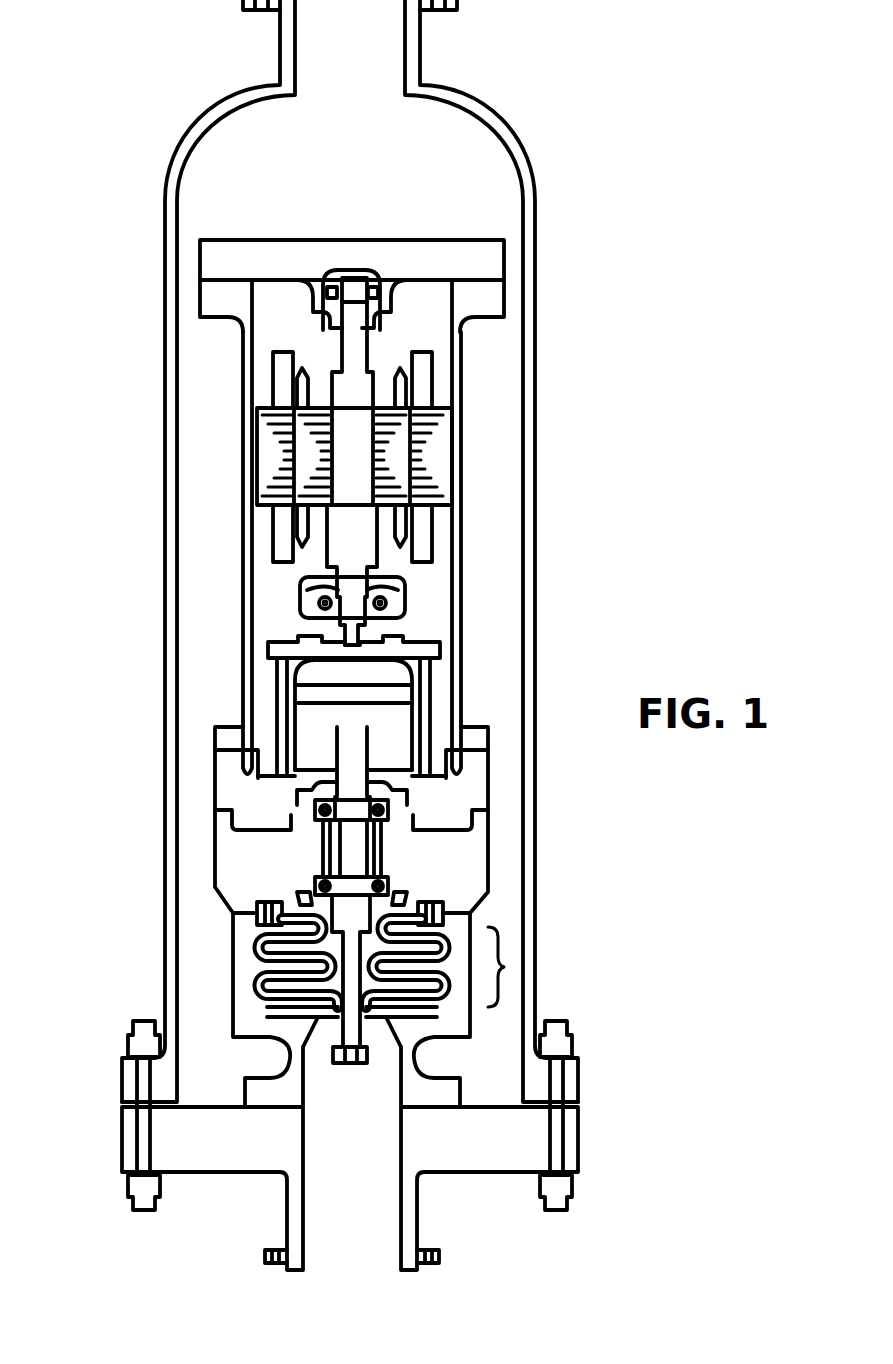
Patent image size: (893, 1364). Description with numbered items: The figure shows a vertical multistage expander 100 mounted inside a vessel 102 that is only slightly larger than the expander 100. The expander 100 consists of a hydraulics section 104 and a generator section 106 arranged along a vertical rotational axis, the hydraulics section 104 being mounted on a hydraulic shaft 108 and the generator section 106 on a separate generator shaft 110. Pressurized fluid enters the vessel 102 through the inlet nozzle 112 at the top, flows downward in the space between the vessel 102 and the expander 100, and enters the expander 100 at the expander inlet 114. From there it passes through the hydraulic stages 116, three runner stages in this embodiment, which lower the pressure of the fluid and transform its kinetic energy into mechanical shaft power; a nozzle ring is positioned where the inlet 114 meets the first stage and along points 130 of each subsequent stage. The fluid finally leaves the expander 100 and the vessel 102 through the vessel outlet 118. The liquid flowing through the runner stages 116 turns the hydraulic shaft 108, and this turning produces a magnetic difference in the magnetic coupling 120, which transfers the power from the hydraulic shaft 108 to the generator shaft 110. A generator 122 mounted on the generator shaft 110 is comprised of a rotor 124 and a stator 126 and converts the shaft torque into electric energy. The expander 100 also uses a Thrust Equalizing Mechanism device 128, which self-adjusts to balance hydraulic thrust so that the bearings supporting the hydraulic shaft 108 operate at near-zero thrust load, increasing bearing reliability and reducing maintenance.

The expander 100 is at (283, 240).
The vessel 102 is at (196, 122).
The hydraulics section 104 is at (235, 840).
The generator section 106 is at (267, 318).
The hydraulic shaft 108 is at (350, 865).
The generator shaft 110 is at (342, 434).
The inlet nozzle 112 is at (363, 50).
The expander inlet 114 is at (257, 905).
The hydraulic stages 116 is at (390, 968).
The vessel outlet 118 is at (362, 1210).
The magnetic coupling 120 is at (308, 740).
The generator 122 is at (253, 475).
The rotor 124 is at (400, 437).
The stator 126 is at (437, 477).
The Thrust Equalizing Mechanism (TEM) device 128 is at (300, 898).
The points 130 is at (266, 945).